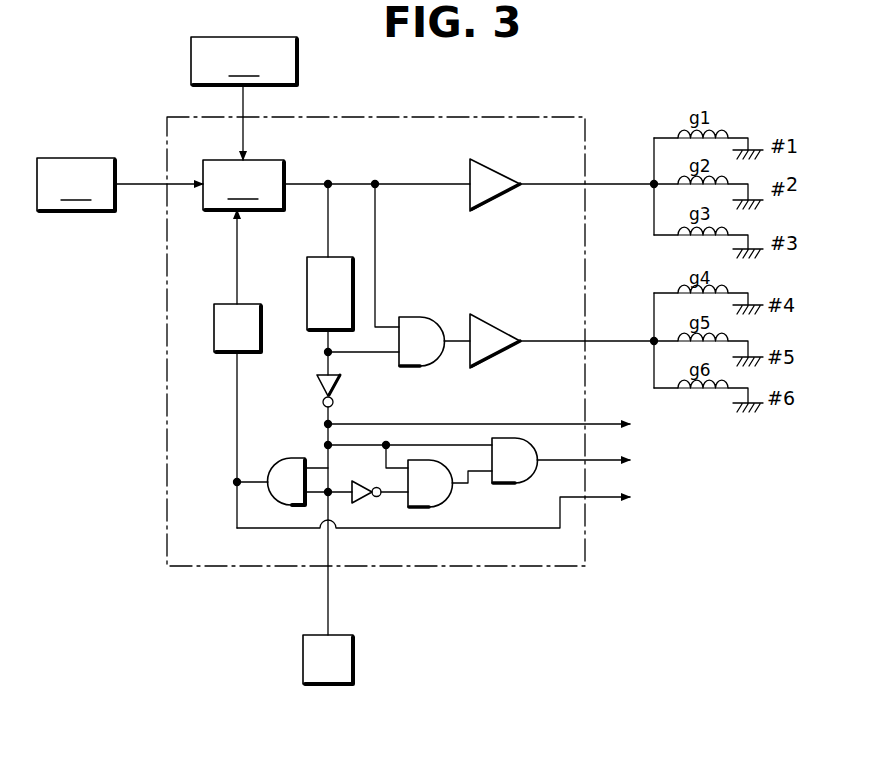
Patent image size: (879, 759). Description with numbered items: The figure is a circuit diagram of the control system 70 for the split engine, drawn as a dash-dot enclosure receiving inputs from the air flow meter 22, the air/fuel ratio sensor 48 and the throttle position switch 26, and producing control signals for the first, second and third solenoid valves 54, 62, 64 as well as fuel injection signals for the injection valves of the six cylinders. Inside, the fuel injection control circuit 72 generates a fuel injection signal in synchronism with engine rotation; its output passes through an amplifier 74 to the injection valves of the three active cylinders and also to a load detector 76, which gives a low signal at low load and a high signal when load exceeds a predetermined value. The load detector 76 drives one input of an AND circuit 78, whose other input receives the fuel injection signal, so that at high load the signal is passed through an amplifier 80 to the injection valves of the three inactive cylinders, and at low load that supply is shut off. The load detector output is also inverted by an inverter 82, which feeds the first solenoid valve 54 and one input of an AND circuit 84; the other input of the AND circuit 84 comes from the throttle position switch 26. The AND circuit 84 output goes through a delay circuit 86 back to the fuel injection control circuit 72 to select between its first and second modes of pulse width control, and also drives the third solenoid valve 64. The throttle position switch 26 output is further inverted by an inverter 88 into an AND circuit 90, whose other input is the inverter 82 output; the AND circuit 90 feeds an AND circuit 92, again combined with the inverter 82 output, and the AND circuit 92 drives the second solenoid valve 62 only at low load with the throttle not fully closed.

The air flow meter 22 is at (244, 98).
The air/fuel ratio sensor 48 is at (120, 184).
The fuel injection control circuit 72 is at (336, 185).
The delay circuit 86 is at (228, 303).
The load detector 76 is at (354, 267).
The amplifier 74 is at (497, 206).
The AND circuit 78 is at (422, 316).
The amplifier 80 is at (497, 367).
The inverter 82 is at (341, 385).
The AND circuit 84 is at (291, 457).
The inverter 88 is at (360, 504).
The AND circuit 90 is at (428, 508).
The AND circuit 92 is at (510, 484).
The throttle position switch 26 is at (354, 661).
The control system 70 is at (586, 112).
The first solenoid valve 54 is at (497, 426).
The second solenoid valve 62 is at (603, 462).
The third solenoid valve 64 is at (453, 507).